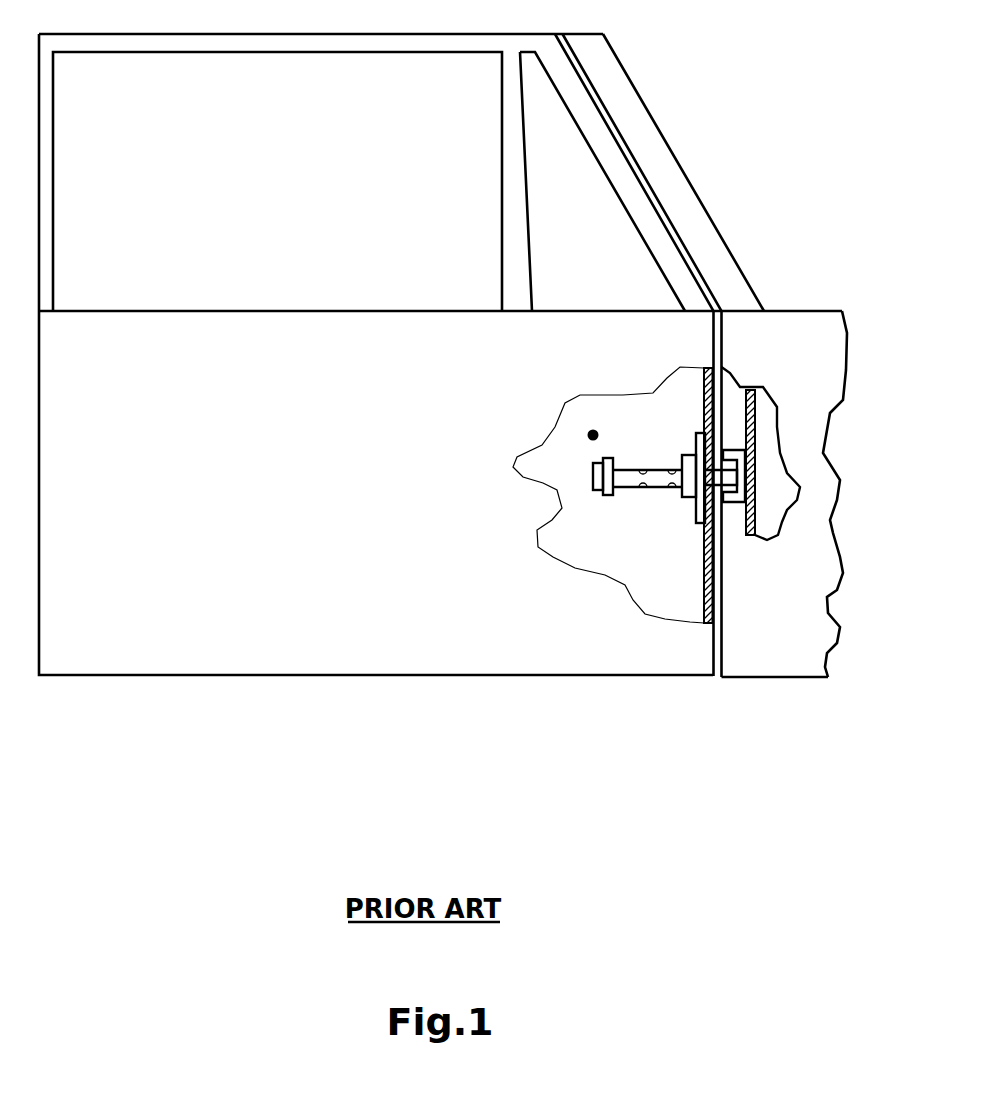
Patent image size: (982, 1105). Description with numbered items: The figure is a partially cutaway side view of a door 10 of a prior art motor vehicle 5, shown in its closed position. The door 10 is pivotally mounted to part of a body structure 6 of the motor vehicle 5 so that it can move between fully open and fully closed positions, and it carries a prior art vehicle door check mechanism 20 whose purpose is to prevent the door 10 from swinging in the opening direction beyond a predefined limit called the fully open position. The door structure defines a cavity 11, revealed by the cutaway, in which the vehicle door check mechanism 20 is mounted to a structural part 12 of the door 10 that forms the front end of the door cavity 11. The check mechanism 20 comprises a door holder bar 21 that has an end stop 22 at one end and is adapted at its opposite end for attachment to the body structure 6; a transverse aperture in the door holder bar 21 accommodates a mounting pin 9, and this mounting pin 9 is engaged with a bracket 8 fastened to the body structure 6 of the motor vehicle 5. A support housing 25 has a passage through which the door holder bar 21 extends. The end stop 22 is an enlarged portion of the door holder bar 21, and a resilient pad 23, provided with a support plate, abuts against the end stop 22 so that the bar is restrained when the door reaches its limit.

The motor vehicle 5 is at (687, 178).
The body structure 6 is at (753, 388).
The bracket 8 is at (730, 505).
The mounting pin 9 is at (738, 463).
The door 10 is at (195, 677).
The cavity 11 is at (593, 435).
The structural part 12 is at (705, 587).
The vehicle door check mechanism 20 is at (652, 488).
The door holder bar 21 is at (685, 497).
The end stop 22 is at (593, 489).
The resilient pad 23 is at (607, 492).
The support housing 25 is at (687, 453).